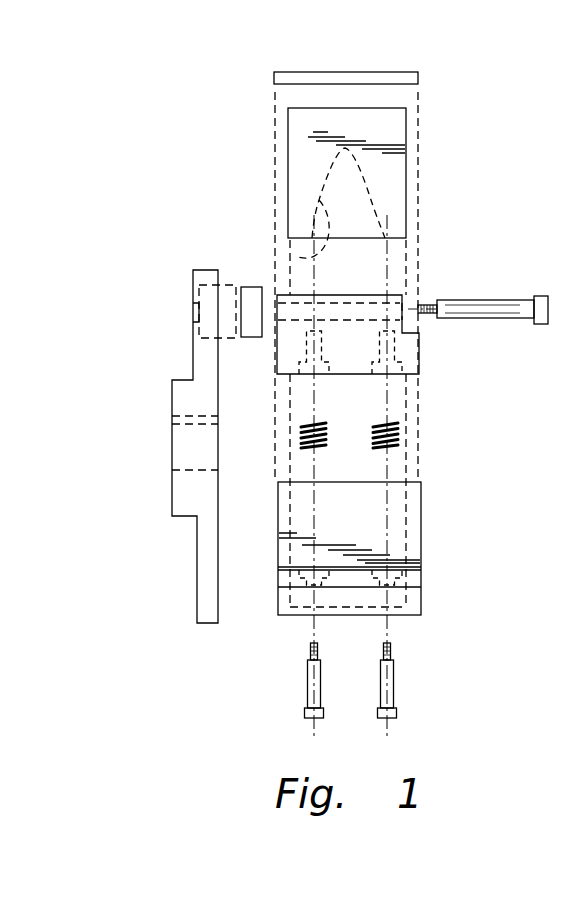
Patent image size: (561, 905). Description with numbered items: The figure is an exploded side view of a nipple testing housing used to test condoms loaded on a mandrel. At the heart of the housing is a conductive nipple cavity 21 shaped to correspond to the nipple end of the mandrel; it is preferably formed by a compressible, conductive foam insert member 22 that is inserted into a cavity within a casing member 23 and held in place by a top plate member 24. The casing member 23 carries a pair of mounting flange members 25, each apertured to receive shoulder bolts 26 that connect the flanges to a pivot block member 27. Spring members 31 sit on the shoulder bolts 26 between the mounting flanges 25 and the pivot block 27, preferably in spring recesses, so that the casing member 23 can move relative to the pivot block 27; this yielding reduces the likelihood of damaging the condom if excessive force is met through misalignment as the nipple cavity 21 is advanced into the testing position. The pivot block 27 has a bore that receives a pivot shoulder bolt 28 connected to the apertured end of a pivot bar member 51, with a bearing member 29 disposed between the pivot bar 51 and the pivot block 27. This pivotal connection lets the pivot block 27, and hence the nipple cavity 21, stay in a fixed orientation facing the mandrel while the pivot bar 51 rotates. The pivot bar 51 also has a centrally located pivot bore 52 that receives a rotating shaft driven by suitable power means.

The conductive nipple cavity 21 is at (296, 256).
The compressible conductive foam insert member 22 is at (300, 175).
The casing member 23 is at (421, 515).
The top plate member 24 is at (375, 72).
The mounting flange members 25 is at (421, 580).
The shoulder bolts 26 is at (308, 680).
The pivot block members 27 is at (419, 356).
The pivot shoulder bolts 28 is at (500, 300).
The bearing members 29 is at (246, 340).
The spring members 31 is at (400, 428).
The pivot bar members 51 is at (197, 572).
The pivot bore 52 is at (185, 470).